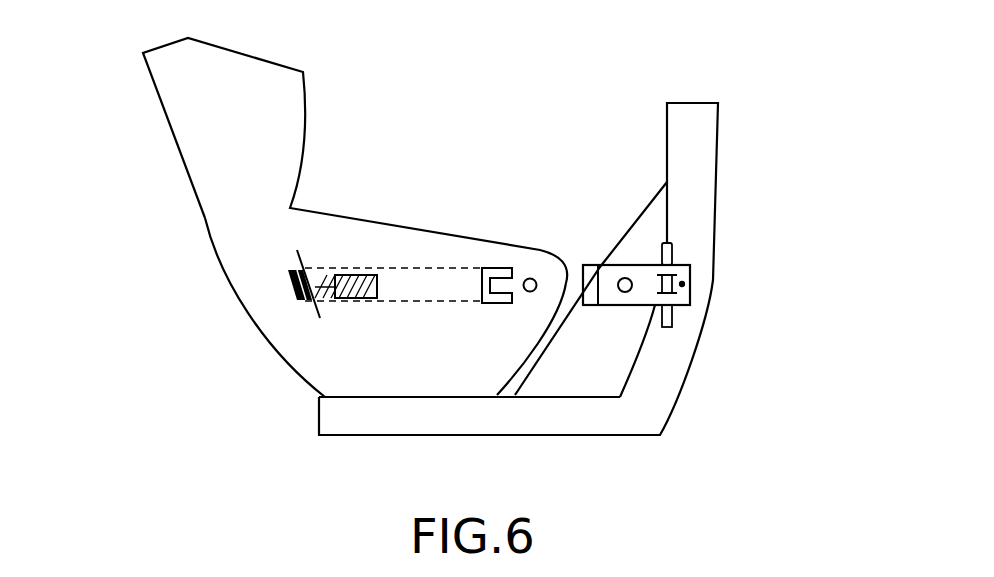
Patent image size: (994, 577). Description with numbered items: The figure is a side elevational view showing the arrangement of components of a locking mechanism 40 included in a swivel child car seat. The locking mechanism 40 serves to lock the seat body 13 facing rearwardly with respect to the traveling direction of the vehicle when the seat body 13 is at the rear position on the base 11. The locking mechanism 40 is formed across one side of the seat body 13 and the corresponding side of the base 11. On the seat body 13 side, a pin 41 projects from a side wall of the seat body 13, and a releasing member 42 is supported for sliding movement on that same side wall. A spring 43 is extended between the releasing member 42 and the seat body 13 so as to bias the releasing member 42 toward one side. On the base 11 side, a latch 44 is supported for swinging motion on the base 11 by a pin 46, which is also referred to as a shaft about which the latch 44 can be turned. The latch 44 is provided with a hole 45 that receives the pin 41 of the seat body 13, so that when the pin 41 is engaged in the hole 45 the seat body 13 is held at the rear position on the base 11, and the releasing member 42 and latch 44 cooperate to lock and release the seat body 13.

The base 11 is at (717, 309).
The seat body 13 is at (197, 230).
The locking mechanism 40 is at (578, 368).
The pin 41 is at (535, 278).
The releasing member 42 is at (425, 260).
The spring 43 is at (362, 292).
The latch 44 is at (642, 305).
The hole 45 is at (625, 278).
The pin 46 is at (672, 252).